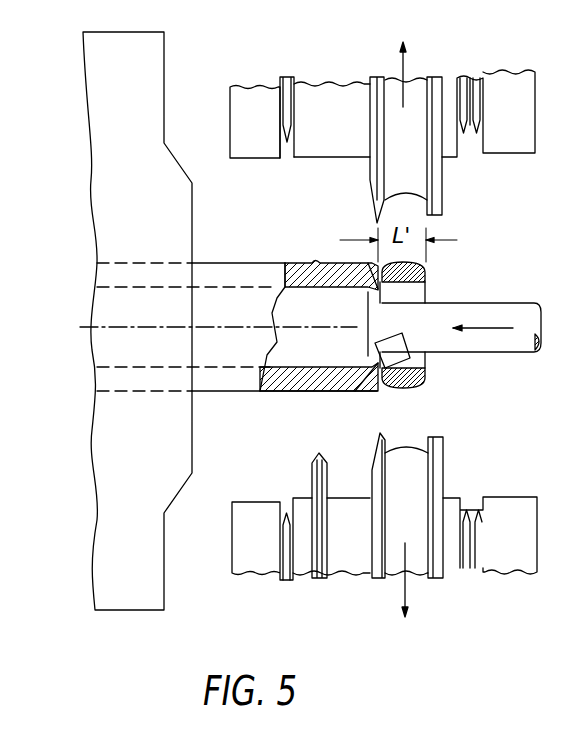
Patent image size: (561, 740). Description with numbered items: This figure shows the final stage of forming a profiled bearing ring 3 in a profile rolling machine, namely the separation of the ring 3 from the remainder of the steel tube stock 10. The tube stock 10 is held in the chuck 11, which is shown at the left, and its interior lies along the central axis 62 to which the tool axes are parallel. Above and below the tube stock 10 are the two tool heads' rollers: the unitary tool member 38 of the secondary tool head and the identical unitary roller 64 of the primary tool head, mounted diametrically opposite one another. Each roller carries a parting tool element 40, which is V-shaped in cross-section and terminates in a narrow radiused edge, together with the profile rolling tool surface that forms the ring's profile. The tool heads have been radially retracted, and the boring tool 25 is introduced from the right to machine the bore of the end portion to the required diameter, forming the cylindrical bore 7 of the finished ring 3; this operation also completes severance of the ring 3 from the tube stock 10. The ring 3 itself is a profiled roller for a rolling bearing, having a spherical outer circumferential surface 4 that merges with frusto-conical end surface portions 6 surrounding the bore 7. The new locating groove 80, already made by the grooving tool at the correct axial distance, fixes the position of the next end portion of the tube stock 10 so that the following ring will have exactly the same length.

The profiled bearing ring 3 is at (436, 373).
The spherical outer circumferential surface 4 is at (426, 378).
The frusto-conical end surface portions 6 is at (426, 270).
The cylindrical bore 7 is at (426, 291).
The steel tube stock 10 is at (243, 393).
The chuck 11 is at (132, 513).
The boring tool 25 is at (503, 344).
The unitary tool member 38 is at (362, 179).
The parting tool element 40 is at (372, 102).
The central axis 62 is at (292, 322).
The unitary roller 64 is at (456, 478).
The new locating groove 80 is at (316, 392).